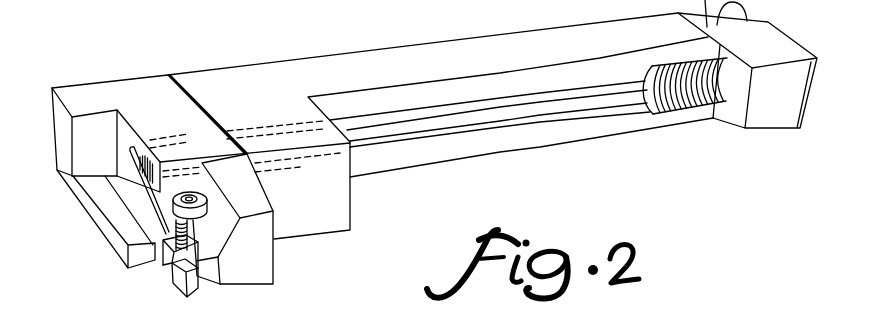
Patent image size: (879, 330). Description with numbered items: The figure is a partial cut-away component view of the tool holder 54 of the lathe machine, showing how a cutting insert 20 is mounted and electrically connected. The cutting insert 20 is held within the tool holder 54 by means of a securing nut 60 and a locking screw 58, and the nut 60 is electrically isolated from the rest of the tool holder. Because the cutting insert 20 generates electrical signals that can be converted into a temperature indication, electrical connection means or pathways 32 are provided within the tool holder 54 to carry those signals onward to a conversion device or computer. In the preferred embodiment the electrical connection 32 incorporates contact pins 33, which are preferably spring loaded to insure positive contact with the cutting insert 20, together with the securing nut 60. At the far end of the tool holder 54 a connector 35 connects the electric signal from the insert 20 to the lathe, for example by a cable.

The cutting insert 20 is at (255, 277).
The electrical connection means 32 is at (125, 216).
The contact pins 33 is at (130, 174).
The connector 35 is at (772, 118).
The tool holder 54 is at (413, 53).
The locking screw 58 is at (204, 196).
The securing nut 60 is at (163, 268).